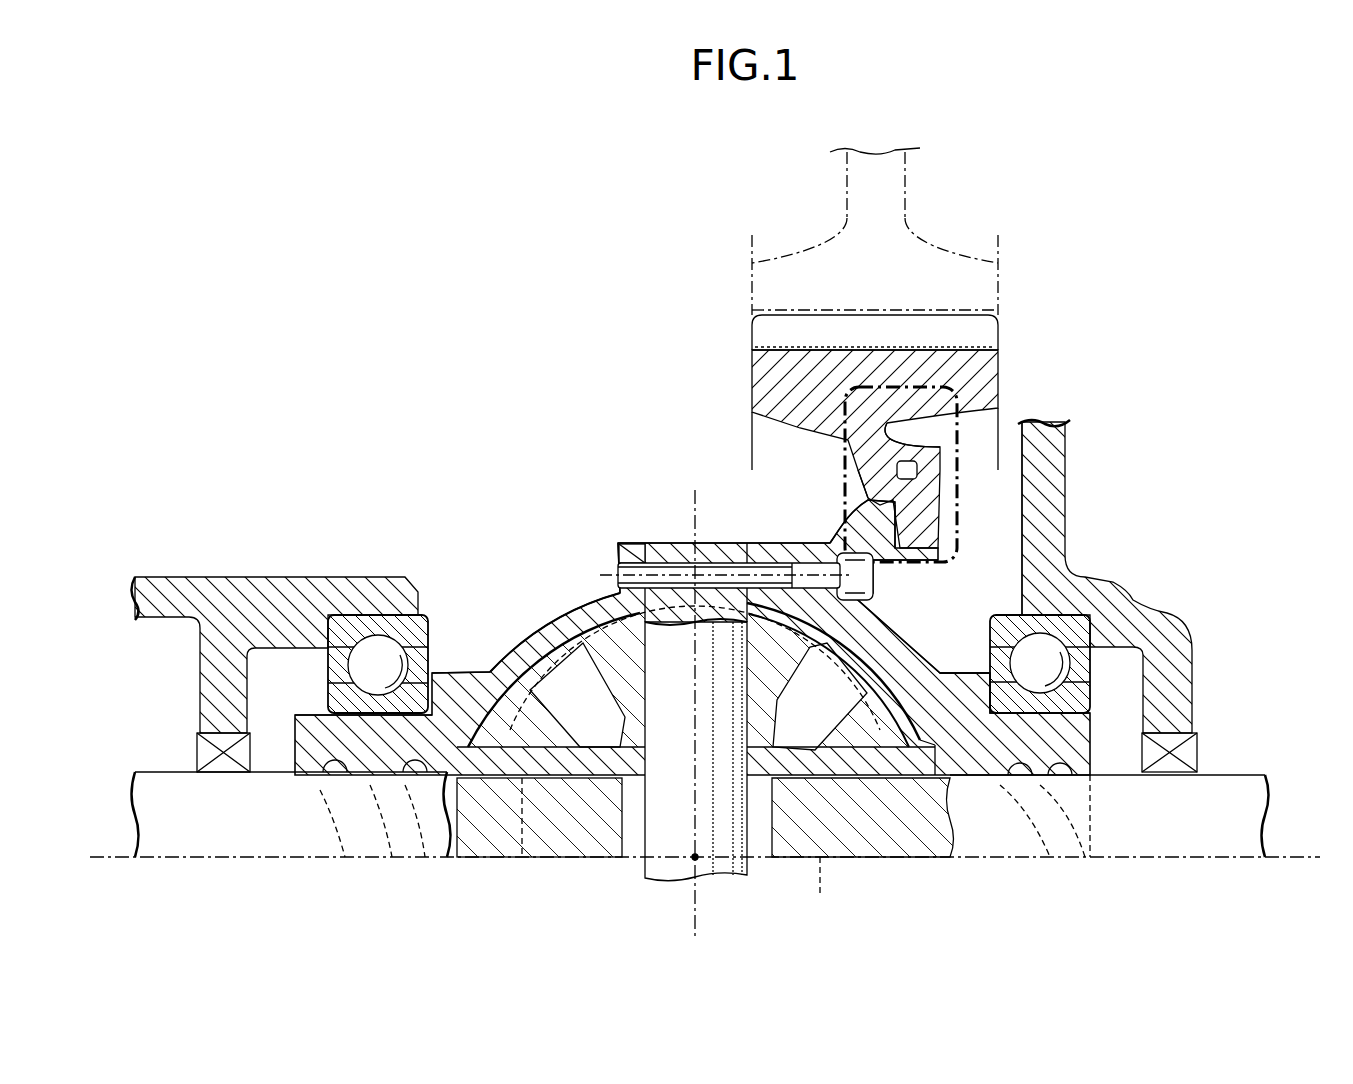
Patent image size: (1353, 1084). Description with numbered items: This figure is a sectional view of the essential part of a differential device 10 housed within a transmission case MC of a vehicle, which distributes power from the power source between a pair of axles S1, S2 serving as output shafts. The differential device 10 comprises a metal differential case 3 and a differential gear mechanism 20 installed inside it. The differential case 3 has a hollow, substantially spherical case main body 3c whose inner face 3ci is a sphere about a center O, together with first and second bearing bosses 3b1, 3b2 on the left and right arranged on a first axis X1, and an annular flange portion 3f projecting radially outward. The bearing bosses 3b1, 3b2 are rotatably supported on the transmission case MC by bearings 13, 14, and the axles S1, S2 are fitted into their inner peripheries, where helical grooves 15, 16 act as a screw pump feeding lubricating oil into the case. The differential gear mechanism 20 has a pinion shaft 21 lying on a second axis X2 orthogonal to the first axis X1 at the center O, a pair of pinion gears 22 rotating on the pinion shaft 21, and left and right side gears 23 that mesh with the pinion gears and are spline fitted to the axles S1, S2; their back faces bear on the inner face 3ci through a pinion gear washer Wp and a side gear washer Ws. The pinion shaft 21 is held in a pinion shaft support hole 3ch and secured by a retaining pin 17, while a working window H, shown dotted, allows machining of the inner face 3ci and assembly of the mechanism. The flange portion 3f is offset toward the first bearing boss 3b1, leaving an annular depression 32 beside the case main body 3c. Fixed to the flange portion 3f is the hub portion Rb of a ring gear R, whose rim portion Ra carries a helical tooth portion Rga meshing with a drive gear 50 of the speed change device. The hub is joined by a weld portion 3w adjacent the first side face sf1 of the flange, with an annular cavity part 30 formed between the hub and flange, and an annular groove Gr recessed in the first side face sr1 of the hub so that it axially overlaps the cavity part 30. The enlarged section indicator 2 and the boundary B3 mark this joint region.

The drive gear 50 is at (845, 180).
The ring gear R is at (823, 394).
The tooth portion Rga is at (866, 332).
The rim portion Ra is at (746, 367).
The hub portion Rb is at (842, 458).
The annular groove Gr is at (905, 425).
The first side face of hub portion sr1 is at (960, 465).
The weld portion 3w is at (915, 470).
The section view indicator 2 is at (816, 467).
The fastening boundary B3 is at (868, 480).
The retaining pin 17 is at (722, 575).
The flange portion 3f is at (850, 515).
The first side face of flange portion sf1 is at (940, 525).
The annular cavity part 30 is at (905, 478).
The pinion shaft support hole 3ch is at (660, 543).
The differential case 3 is at (695, 609).
The differential device 10 is at (552, 533).
The pinion gear washer Wp is at (610, 600).
The transmission case MC is at (205, 575).
The bearing 14 is at (378, 660).
The case main body 3c is at (520, 628).
The inner face 3ci is at (545, 650).
The side gear washer Ws is at (478, 680).
The second bearing boss 3b2 is at (310, 718).
The bearing 13 is at (1032, 660).
The annular depression 32 is at (895, 645).
The first bearing boss 3b1 is at (1075, 718).
The axle S2 is at (218, 834).
The helical groove 16 is at (338, 788).
The helical groove 15 is at (1060, 785).
The axle S1 is at (1223, 834).
The side gear 23 is at (548, 790).
The pinion gear 22 is at (605, 800).
The pinion shaft 21 is at (672, 848).
The differential gear mechanism 20 is at (705, 777).
The center O is at (697, 860).
The second axis X2 is at (705, 918).
The working window H is at (819, 891).
The first axis X1 is at (1225, 865).